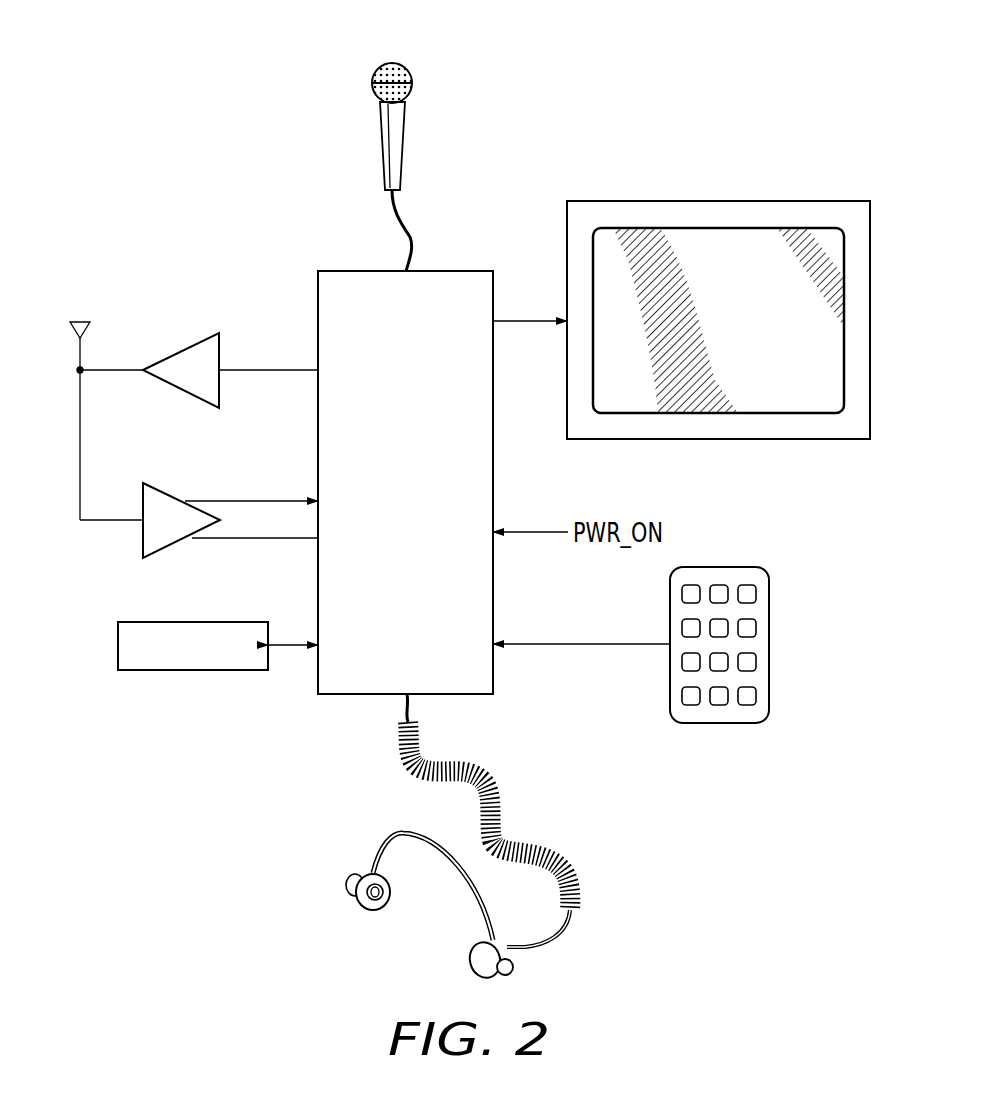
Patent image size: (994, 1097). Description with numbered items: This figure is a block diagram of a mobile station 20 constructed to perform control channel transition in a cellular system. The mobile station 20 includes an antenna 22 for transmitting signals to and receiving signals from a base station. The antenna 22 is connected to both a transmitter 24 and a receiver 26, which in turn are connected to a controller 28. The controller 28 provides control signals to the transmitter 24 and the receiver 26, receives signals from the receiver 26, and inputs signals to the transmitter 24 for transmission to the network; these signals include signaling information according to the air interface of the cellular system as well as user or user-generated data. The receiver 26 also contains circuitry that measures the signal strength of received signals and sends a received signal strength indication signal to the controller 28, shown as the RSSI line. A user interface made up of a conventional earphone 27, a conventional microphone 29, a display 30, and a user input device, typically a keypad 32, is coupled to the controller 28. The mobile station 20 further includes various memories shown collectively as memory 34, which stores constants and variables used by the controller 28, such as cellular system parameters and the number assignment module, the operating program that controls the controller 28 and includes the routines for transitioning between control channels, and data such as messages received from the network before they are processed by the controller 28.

The mobile station 20 is at (192, 160).
The antenna 22 is at (80, 322).
The transmitter 24 is at (179, 391).
The receiver 26 is at (163, 489).
The earphone 27 is at (355, 898).
The controller 28 is at (421, 517).
The microphone 29 is at (393, 63).
The display 30 is at (718, 201).
The keypad 32 is at (720, 723).
The memory 34 is at (118, 645).